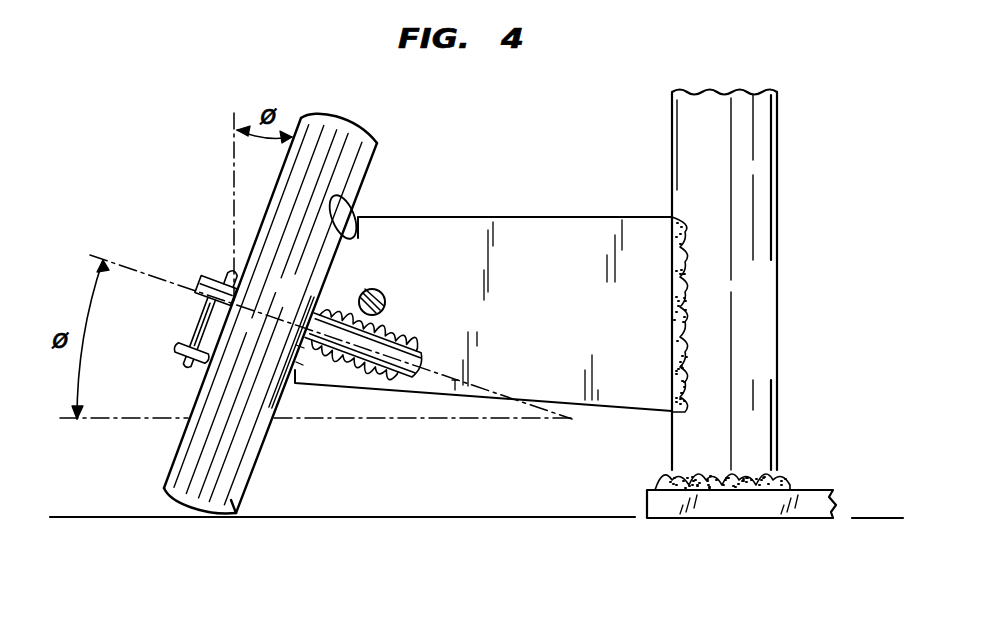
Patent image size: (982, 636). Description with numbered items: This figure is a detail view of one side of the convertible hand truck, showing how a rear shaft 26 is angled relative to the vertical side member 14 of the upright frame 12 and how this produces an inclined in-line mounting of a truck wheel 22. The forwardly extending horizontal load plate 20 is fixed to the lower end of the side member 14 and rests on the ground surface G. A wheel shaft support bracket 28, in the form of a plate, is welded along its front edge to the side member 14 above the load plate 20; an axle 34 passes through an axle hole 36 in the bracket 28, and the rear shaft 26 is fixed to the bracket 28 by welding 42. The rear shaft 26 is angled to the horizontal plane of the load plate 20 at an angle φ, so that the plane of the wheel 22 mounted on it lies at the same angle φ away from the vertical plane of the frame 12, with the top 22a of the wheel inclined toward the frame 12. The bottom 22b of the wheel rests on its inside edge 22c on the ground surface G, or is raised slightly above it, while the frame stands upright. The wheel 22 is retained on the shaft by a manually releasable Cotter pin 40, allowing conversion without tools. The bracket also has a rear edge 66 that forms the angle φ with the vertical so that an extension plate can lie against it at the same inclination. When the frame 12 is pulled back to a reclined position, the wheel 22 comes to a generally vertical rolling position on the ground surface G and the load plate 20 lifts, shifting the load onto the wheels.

The upright frame 12 is at (778, 144).
The vertical side member 14 is at (777, 285).
The load plate 20 is at (813, 490).
The truck wheel 22 is at (378, 160).
The top of the wheel 22a is at (340, 118).
The bottom of the wheel 22b is at (180, 505).
The inside edge of the wheel 22c is at (223, 515).
The rear shaft 26 is at (347, 365).
The wheel shaft support bracket 28 is at (528, 217).
The axle 34 is at (384, 307).
The axle hole 36 is at (383, 296).
The Cotter pin 40 is at (228, 277).
The welding 42 is at (388, 377).
The rear edge 66 is at (352, 198).
The ground surface G is at (533, 517).